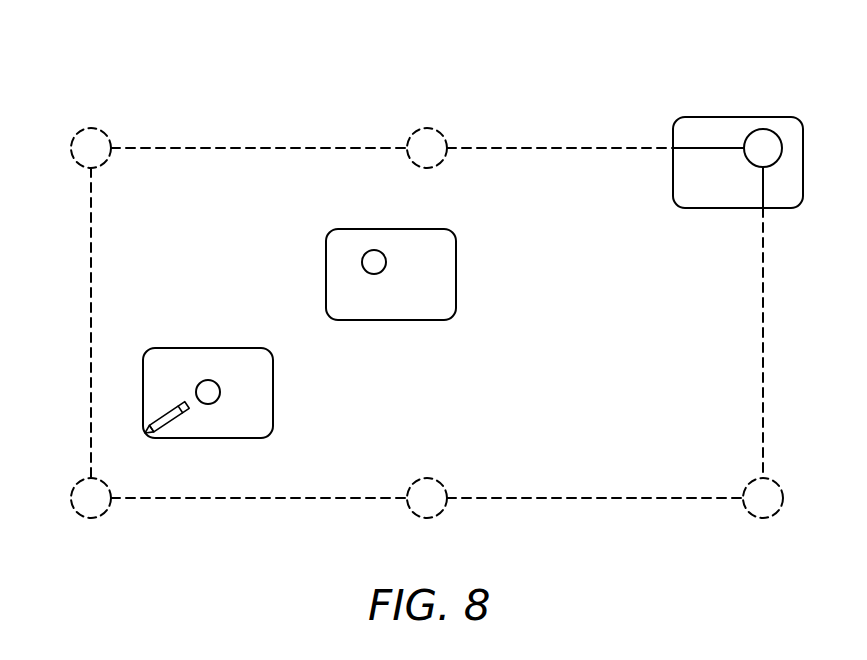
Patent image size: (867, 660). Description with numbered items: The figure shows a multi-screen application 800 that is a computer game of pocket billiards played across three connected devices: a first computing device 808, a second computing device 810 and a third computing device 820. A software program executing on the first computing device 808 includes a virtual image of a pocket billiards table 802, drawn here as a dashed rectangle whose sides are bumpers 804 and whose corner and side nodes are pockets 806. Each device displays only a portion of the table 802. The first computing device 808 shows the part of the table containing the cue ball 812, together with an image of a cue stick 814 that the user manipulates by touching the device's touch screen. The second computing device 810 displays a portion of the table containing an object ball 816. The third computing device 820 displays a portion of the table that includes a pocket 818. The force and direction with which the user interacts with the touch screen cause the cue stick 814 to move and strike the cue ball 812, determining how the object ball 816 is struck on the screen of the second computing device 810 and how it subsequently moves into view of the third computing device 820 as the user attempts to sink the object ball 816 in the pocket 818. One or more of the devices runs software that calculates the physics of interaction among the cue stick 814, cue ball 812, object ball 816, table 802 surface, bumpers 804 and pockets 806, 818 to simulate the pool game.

The multi-screen application 800 is at (48, 58).
The pocket billiards table 802 is at (225, 107).
The bumpers 804 is at (765, 348).
The pockets 806 is at (90, 128).
The first computing device 808 is at (273, 392).
The second computing device 810 is at (456, 274).
The cue ball 812 is at (208, 380).
The cue stick 814 is at (172, 423).
The object ball 816 is at (386, 261).
The pocket 818 is at (749, 167).
The third computing device 820 is at (803, 162).